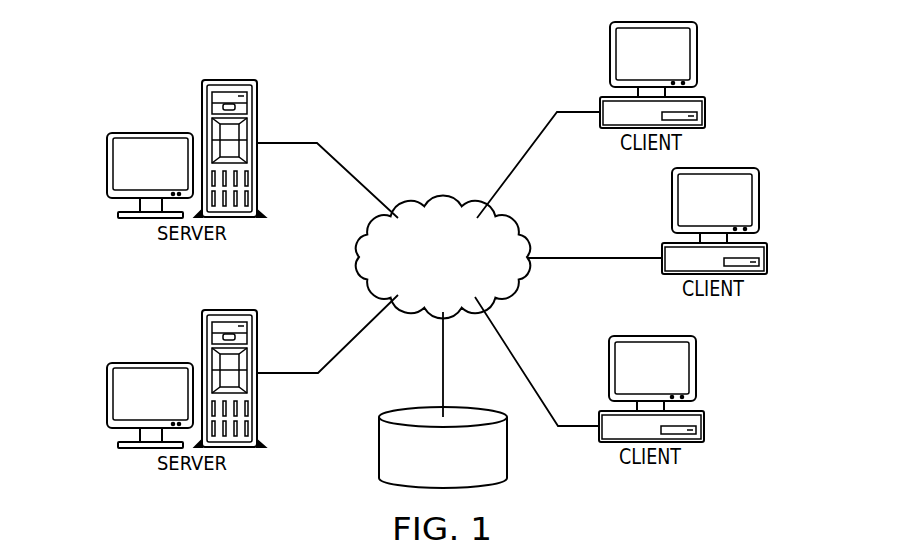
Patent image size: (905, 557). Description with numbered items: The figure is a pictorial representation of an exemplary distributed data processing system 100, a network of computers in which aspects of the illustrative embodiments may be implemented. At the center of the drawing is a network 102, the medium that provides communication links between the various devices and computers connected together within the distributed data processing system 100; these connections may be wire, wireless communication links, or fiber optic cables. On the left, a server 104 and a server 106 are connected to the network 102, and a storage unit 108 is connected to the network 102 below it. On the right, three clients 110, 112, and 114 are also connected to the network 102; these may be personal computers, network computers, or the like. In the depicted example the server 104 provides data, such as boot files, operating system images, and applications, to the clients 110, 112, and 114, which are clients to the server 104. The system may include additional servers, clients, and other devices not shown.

The distributed data processing system 100 is at (320, 60).
The network 102 is at (420, 210).
The server 104 is at (107, 165).
The server 106 is at (107, 395).
The storage unit 108 is at (379, 446).
The client 110 is at (705, 108).
The client 112 is at (768, 264).
The client 114 is at (705, 433).